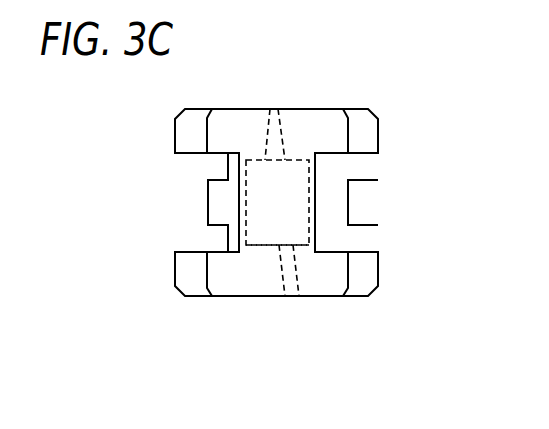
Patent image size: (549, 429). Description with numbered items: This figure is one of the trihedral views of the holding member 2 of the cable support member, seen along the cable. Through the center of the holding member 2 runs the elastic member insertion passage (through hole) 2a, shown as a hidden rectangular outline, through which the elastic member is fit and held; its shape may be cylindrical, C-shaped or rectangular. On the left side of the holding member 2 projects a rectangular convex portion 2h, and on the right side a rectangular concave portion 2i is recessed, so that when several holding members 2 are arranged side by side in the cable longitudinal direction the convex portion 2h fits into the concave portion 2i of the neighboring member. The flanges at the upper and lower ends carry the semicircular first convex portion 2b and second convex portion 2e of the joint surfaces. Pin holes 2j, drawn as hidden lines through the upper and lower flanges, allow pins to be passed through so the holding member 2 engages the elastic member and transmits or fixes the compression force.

The holding member 2 is at (305, 109).
The elastic member insertion passage (through hole) 2a is at (273, 245).
The first convex portion 2b is at (188, 140).
The second convex portion 2e is at (367, 133).
The rectangular convex portion 2h is at (218, 207).
The rectangular concave portion 2i is at (349, 202).
The pin hole 2j is at (272, 108).